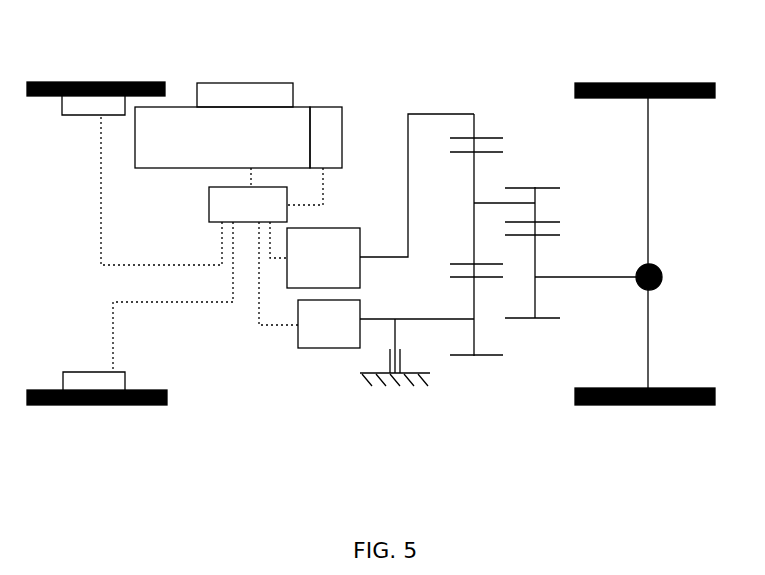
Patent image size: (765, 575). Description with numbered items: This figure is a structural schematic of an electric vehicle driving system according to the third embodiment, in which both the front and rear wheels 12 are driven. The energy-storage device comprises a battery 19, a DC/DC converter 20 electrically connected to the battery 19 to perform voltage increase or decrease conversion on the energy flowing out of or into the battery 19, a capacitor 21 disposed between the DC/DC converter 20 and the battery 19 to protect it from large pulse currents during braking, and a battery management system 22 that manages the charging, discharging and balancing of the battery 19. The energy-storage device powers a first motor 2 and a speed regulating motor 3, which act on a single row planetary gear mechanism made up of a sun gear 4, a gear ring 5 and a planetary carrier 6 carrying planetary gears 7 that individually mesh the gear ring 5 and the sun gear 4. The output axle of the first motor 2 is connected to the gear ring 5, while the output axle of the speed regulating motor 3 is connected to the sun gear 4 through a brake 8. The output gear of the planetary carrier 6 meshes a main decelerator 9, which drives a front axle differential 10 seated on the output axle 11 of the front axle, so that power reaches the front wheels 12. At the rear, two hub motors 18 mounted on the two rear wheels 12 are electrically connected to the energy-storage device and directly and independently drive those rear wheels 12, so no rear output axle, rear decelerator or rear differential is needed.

The first motor 2 is at (380, 201).
The speed regulating motor 3 is at (386, 324).
The sun gear 4 is at (474, 360).
The gear ring 5 is at (443, 114).
The planetary carrier 6 is at (492, 203).
The planetary gears 7 is at (536, 187).
The brake 8 is at (396, 378).
The main decelerator 9 is at (537, 258).
The front axle differential 10 is at (663, 277).
The output axle of the front axle 11 is at (650, 188).
The wheels 12 is at (94, 82).
The hub motors 18 is at (90, 116).
The battery 19 is at (222, 147).
The DC/DC converter 20 is at (199, 243).
The capacitor 21 is at (315, 156).
The battery management system 22 is at (245, 95).